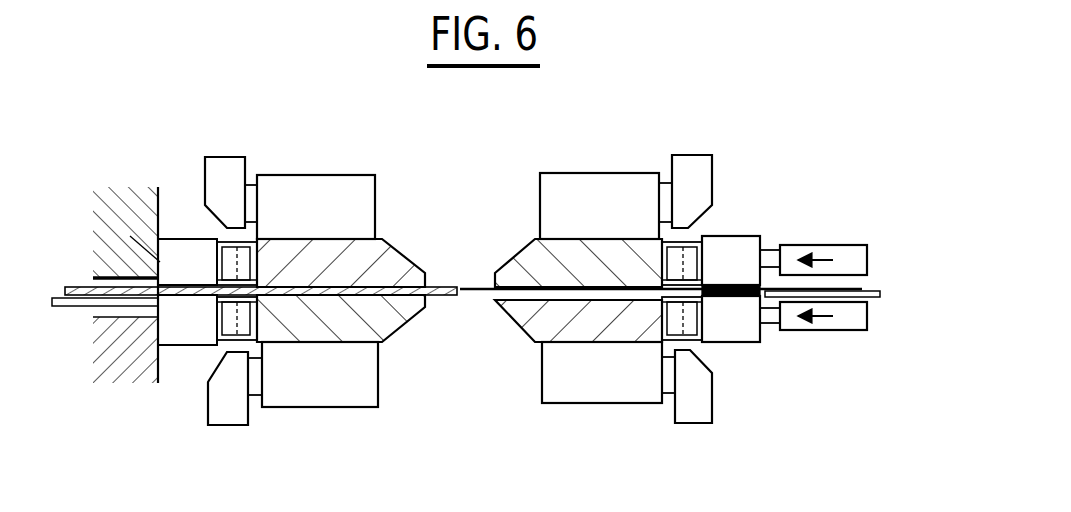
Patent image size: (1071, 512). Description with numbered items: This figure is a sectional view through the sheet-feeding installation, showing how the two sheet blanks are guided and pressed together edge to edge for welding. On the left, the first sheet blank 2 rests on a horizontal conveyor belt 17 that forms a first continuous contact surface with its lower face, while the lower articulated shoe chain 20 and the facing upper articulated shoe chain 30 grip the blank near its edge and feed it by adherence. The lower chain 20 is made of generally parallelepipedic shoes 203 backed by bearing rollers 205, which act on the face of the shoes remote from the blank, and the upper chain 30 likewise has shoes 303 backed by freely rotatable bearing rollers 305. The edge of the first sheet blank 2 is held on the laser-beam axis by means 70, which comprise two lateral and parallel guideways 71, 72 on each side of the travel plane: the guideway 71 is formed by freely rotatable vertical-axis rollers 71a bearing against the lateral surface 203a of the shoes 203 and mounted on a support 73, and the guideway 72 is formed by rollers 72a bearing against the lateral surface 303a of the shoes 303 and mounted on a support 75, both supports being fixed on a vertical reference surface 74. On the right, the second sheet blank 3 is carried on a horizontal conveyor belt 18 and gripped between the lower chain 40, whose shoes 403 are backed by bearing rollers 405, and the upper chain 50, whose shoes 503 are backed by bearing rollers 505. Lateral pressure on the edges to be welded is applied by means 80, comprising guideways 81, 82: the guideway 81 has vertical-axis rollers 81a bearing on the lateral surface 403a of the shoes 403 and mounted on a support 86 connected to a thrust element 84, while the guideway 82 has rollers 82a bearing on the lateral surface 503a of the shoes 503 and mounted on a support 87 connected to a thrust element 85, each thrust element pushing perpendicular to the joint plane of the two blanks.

The first sheet blank 2 is at (433, 284).
The second sheet blank 3 is at (483, 284).
The horizontal conveyor belt 17 is at (72, 305).
The horizontal conveyor belt 18 is at (879, 299).
The lower articulated shoe chain 20 is at (404, 341).
The upper articulated shoe chain 30 is at (402, 246).
The lower chain 40 is at (516, 343).
The upper chain 50 is at (511, 249).
The means for maintaining the edge to be welded 70 is at (191, 180).
The guideway 71 is at (193, 352).
The rollers 71a is at (226, 340).
The guideway 72 is at (182, 233).
The rollers 72a is at (225, 242).
The support 73 is at (188, 348).
The vertical reference surface 74 is at (142, 268).
The support 75 is at (187, 262).
The means for exerting a lateral pressure 80 is at (762, 192).
The guideway 81 is at (731, 368).
The rollers 81a is at (711, 365).
The guideway 82 is at (714, 224).
The rollers 82a is at (688, 240).
The thrust element 84 is at (835, 330).
The thrust element 85 is at (827, 250).
The support 86 is at (745, 332).
The support 87 is at (763, 242).
The shoes 203 is at (352, 333).
The lateral surface 203a is at (250, 352).
The bearing rollers 205 is at (323, 387).
The shoes 303 is at (362, 247).
The lateral surface 303a is at (260, 250).
The bearing rollers 305 is at (357, 192).
The shoes 403 is at (560, 323).
The lateral surface 403a is at (637, 347).
The bearing rollers 405 is at (612, 390).
The shoes 503 is at (600, 247).
The lateral surface 503a is at (640, 235).
The bearing rollers 505 is at (553, 185).